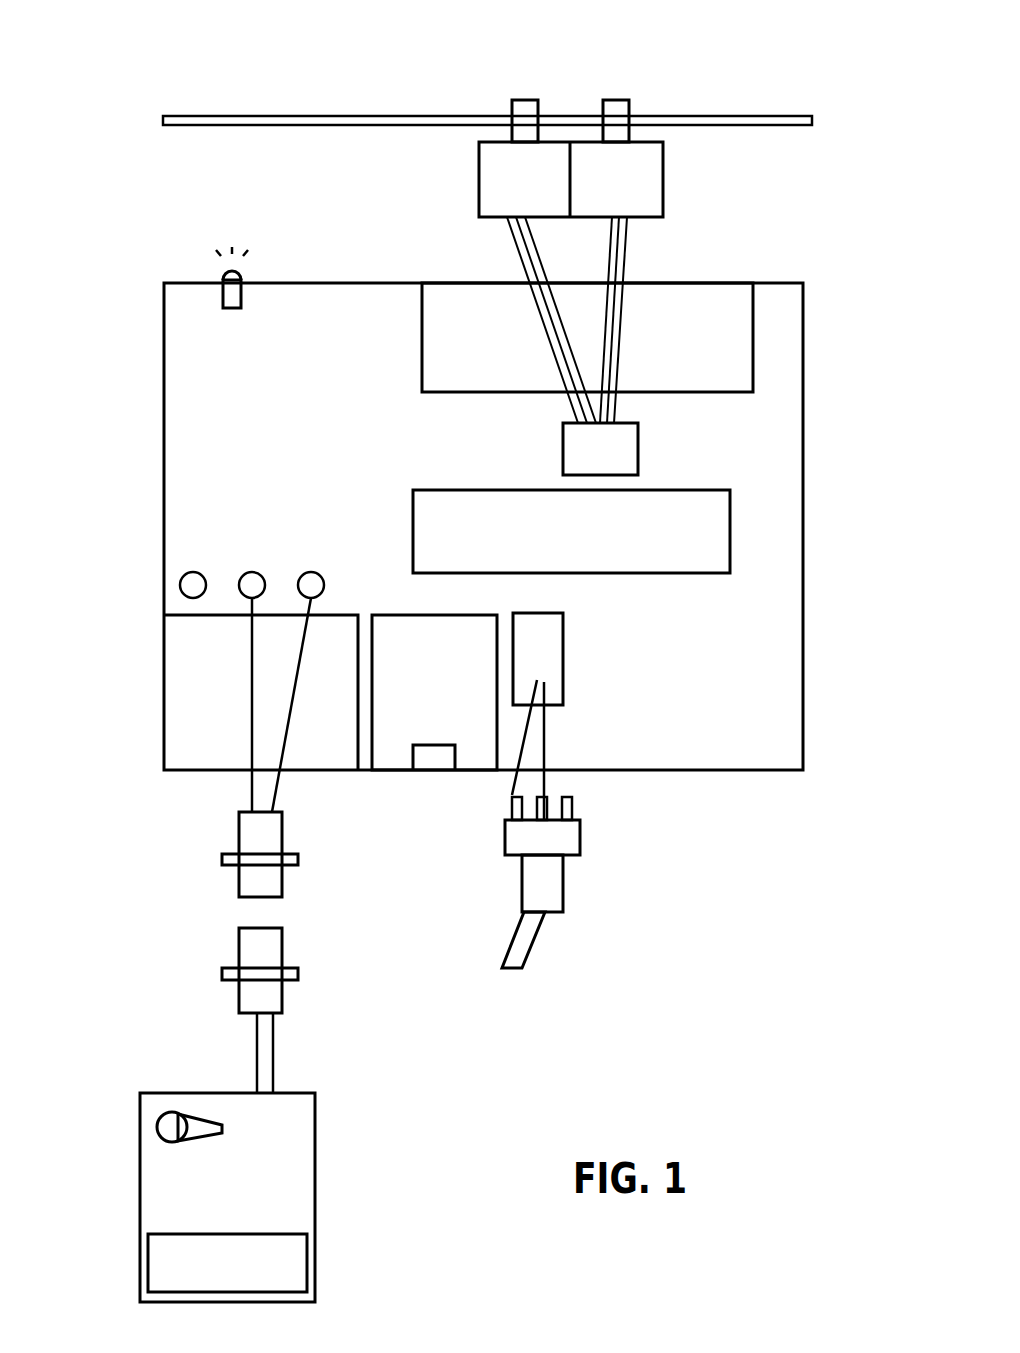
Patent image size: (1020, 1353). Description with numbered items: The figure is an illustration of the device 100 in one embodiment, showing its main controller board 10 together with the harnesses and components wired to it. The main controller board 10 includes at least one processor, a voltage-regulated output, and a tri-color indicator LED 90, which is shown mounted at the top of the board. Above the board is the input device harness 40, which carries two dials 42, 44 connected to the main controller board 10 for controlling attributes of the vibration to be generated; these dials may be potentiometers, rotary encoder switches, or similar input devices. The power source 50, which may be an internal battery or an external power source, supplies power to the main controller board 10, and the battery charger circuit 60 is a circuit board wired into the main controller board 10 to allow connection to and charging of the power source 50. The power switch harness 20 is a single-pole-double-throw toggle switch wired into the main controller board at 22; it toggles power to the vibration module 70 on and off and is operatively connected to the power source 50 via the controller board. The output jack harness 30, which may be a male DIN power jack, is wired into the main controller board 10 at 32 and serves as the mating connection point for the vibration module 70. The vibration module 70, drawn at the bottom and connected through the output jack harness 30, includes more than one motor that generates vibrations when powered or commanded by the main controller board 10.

The device 100 is at (167, 73).
The main controller board 10 is at (726, 725).
The power switch harness 20 is at (548, 880).
The wiring point of power switch harness 22 is at (540, 660).
The output jack harness 30 is at (215, 897).
The wiring point of output jack harness 32 is at (277, 570).
The input device harness 40 is at (643, 185).
The dial 42 is at (620, 107).
The dial 44 is at (522, 107).
The power source 50 is at (590, 543).
The battery charger circuit 60 is at (452, 707).
The vibration module 70 is at (248, 1210).
The tri-color indicator LED 90 is at (242, 275).